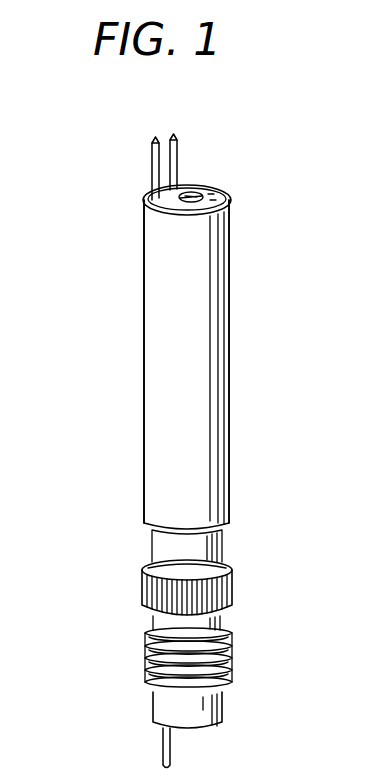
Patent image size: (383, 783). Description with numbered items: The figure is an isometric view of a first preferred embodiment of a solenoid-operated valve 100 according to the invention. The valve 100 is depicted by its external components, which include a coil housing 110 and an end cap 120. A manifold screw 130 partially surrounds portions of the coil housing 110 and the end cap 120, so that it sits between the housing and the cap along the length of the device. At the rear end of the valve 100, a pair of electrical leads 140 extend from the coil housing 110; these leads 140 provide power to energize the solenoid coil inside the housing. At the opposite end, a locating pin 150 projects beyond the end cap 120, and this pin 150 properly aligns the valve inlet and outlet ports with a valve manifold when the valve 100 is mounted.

The solenoid-operated valve 100 is at (125, 201).
The coil housing 110 is at (215, 312).
The end cap 120 is at (153, 695).
The manifold screw 130 is at (145, 582).
The electrical leads 140 is at (152, 138).
The locating pin 150 is at (170, 745).